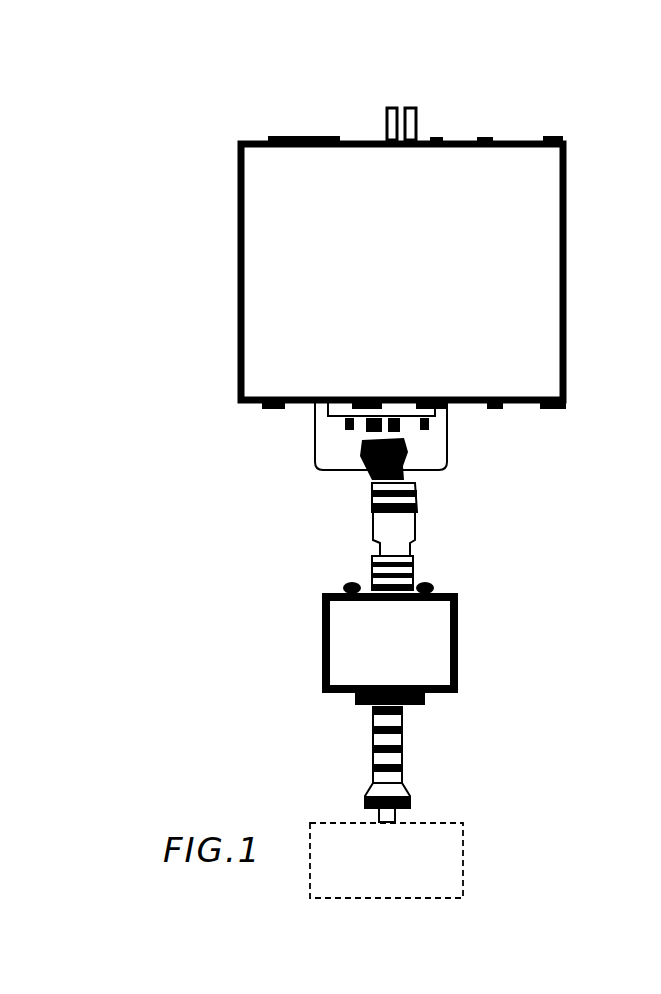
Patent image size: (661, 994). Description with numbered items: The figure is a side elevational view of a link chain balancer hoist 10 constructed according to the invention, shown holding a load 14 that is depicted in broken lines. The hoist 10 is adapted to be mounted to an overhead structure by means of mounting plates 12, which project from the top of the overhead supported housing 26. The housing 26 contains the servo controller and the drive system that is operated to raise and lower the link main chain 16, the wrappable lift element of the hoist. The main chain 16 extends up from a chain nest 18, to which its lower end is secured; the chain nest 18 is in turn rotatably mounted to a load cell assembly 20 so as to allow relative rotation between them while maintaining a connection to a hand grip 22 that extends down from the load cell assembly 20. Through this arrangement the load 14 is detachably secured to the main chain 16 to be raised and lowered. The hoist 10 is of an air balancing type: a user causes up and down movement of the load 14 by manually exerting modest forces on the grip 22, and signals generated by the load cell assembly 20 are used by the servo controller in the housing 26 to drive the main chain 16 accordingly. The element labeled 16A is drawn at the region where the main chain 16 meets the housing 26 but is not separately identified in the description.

The hoist 10 is at (532, 552).
The mounting plates 12 is at (386, 112).
The load 14 is at (463, 823).
The main chain 16 is at (408, 458).
The connector housing bracket 16A is at (366, 462).
The chain nest 18 is at (419, 530).
The load cell assembly 20 is at (458, 652).
The hand grip 22 is at (403, 770).
The housing 26 is at (566, 222).